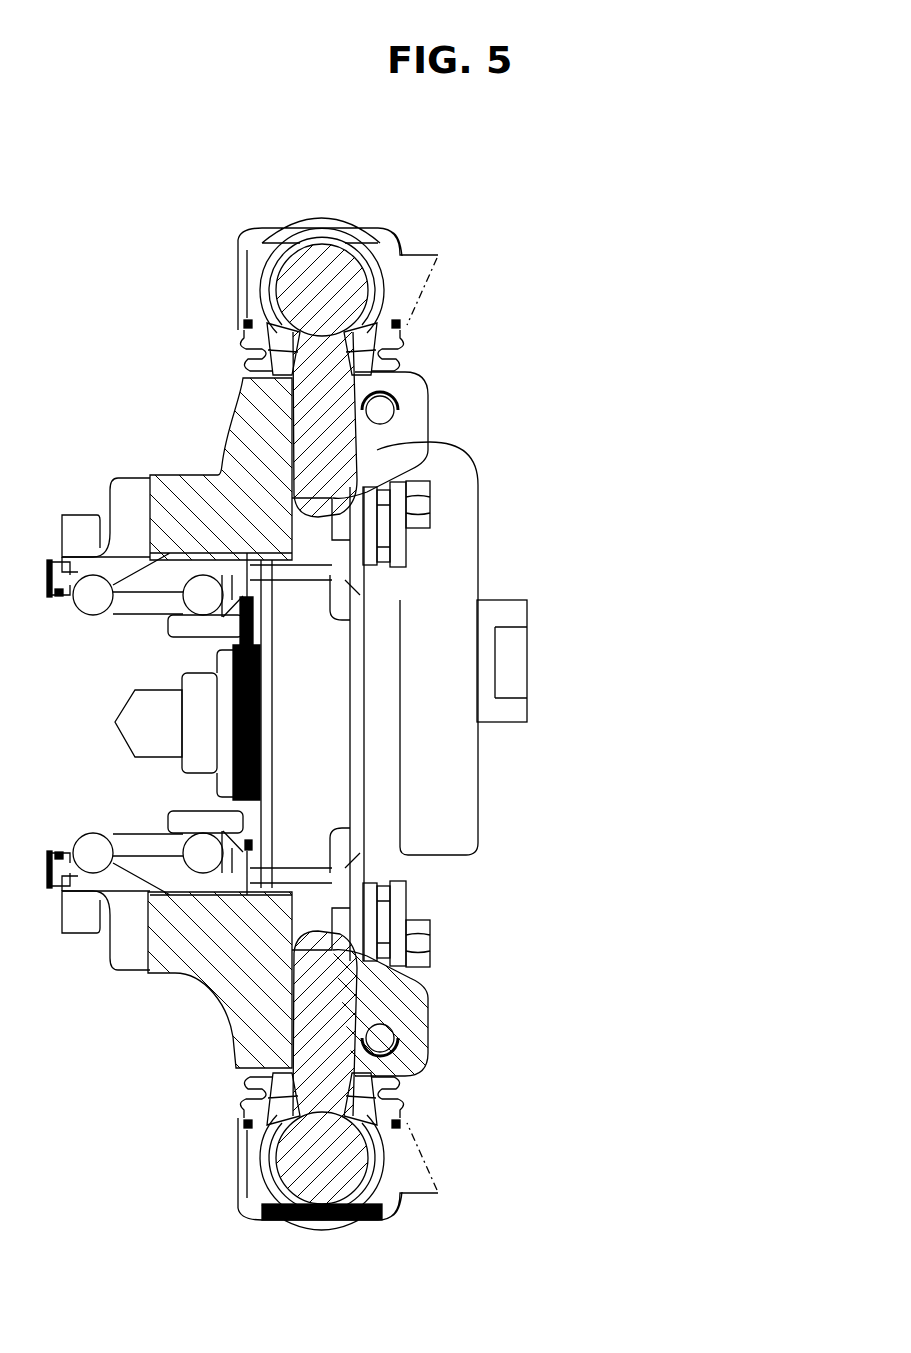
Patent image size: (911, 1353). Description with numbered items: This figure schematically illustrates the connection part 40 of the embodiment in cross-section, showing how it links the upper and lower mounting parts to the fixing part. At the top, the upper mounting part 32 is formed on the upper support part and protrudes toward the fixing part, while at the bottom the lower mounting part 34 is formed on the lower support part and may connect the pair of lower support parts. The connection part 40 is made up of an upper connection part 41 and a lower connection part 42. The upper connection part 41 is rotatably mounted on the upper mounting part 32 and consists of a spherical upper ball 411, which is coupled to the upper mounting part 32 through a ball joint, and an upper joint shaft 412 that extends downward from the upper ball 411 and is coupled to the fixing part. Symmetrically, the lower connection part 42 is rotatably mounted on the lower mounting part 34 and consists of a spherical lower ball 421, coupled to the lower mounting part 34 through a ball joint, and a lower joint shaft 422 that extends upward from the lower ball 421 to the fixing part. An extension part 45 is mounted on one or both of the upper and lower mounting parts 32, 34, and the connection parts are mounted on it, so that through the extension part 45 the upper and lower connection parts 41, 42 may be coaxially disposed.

The upper mounting part 32 is at (407, 250).
The lower mounting part 34 is at (376, 1195).
The extension part 45 is at (400, 1207).
The connection part 40 is at (332, 725).
The upper connection part 41 is at (321, 380).
The upper ball 411 is at (342, 288).
The upper joint shaft 412 is at (330, 368).
The lower connection part 42 is at (328, 820).
The lower ball 421 is at (342, 1153).
The lower joint shaft 422 is at (345, 960).